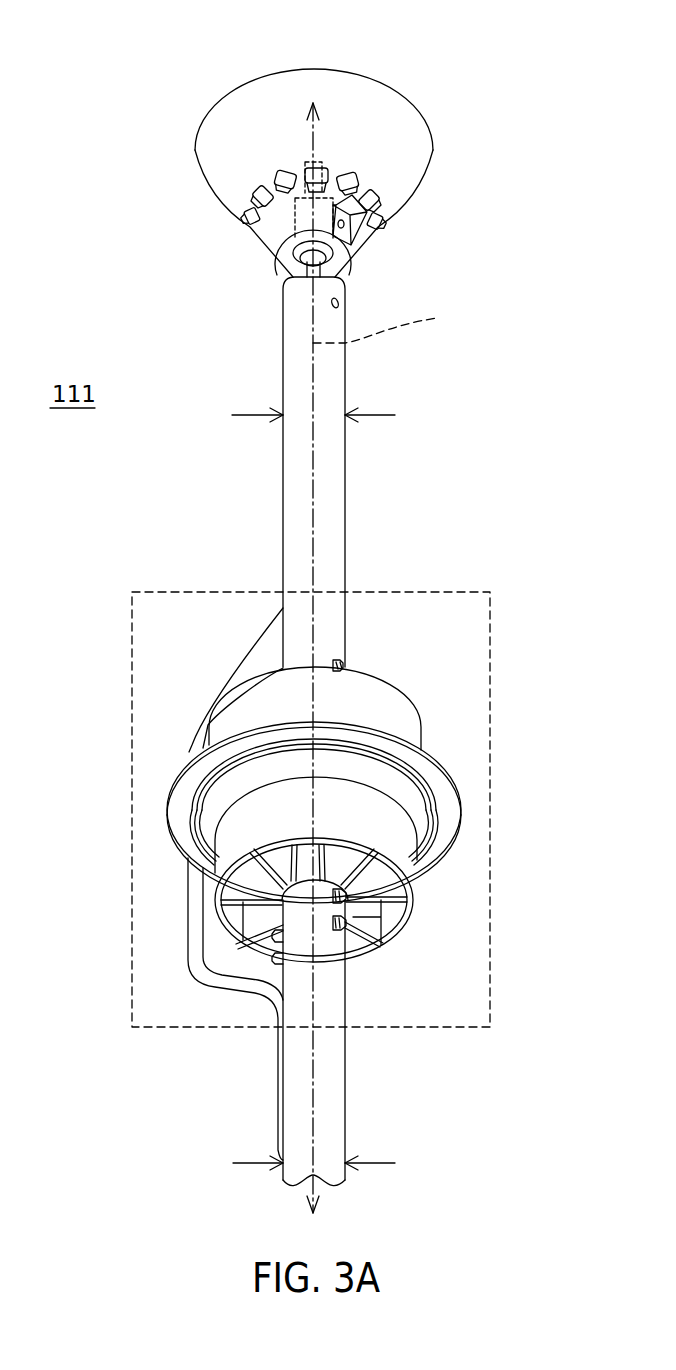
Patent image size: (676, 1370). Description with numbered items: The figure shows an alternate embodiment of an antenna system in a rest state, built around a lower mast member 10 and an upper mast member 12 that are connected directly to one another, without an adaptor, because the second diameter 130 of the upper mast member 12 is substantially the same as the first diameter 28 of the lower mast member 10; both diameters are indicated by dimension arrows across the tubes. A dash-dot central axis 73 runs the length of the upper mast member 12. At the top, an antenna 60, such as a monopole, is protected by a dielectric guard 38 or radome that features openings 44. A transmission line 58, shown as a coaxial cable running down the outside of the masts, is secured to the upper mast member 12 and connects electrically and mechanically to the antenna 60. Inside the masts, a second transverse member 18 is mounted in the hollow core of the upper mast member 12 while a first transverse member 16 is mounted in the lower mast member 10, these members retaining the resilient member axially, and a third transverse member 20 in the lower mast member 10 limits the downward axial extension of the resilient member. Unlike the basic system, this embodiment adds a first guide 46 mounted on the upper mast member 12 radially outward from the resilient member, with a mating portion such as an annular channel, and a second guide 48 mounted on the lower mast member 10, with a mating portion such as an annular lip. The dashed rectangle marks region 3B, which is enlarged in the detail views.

The region 3B is at (451, 585).
The dielectric guard 38 is at (220, 198).
The antenna 60 is at (298, 157).
The openings 44 is at (343, 186).
The upper mast member 12 is at (347, 382).
The central axis 73 is at (391, 324).
The second diameter 130 is at (291, 417).
The transmission line 58 is at (250, 663).
The first guide 46 is at (393, 725).
The second transverse member 18 is at (345, 665).
The second guide 48 is at (393, 842).
The first transverse member 16 is at (275, 960).
The third transverse member 20 is at (280, 937).
The lower mast member 10 is at (345, 1110).
The first diameter 28 is at (297, 1164).